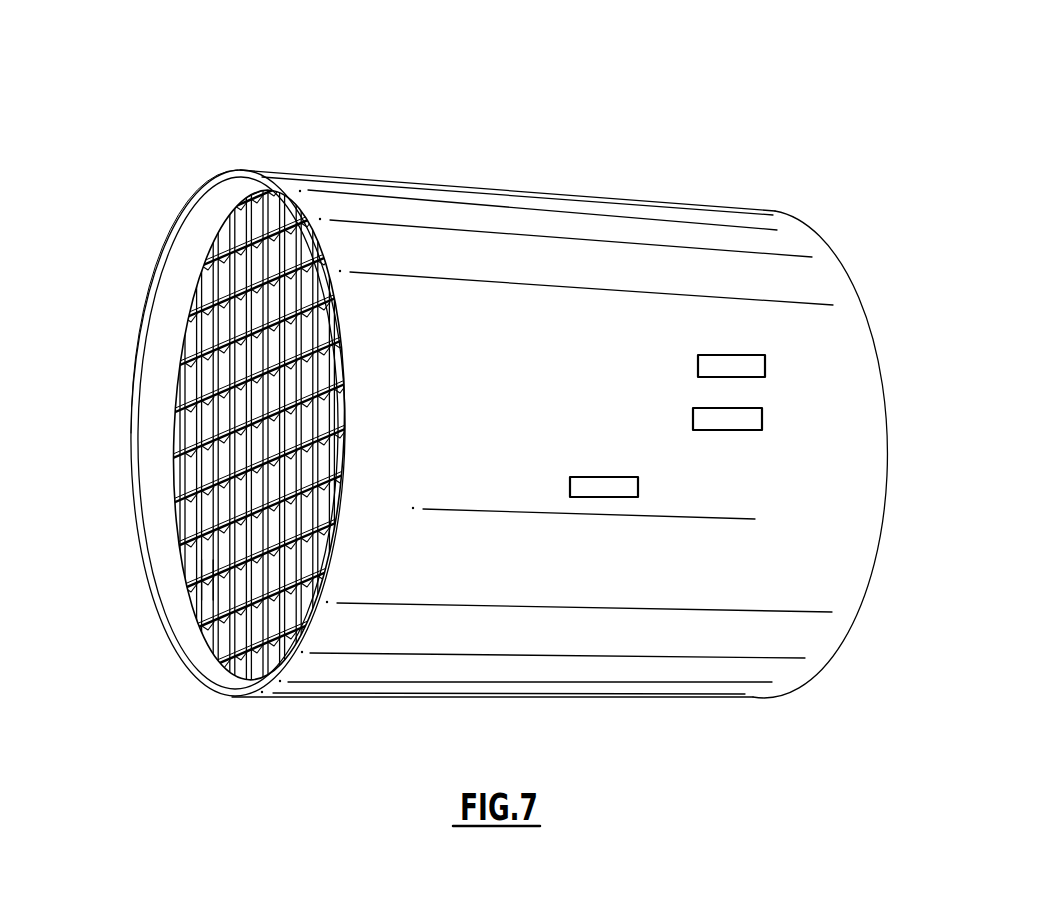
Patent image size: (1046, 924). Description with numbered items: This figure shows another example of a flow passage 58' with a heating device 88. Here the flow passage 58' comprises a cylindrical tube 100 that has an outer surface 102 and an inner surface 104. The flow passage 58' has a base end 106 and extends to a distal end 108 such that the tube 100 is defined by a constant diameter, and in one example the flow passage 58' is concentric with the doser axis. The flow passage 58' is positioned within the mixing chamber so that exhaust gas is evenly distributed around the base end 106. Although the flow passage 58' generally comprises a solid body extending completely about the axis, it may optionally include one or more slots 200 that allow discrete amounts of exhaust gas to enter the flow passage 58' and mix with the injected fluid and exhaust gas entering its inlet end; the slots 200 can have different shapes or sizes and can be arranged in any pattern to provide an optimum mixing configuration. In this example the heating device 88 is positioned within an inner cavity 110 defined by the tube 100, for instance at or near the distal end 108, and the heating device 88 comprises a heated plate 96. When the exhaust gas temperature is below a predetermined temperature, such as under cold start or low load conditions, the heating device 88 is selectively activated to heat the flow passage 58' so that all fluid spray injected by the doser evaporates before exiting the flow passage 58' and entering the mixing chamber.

The flow passage 58' is at (632, 48).
The cylindrical tube 100 is at (662, 197).
The outer surface 102 is at (693, 590).
The inner surface 104 is at (158, 553).
The base end 106 is at (860, 319).
The distal end 108 is at (212, 183).
The inner cavity 110 is at (155, 338).
The heating device 88 is at (195, 295).
The heated plate 96 is at (200, 588).
The slots 200 is at (698, 365).